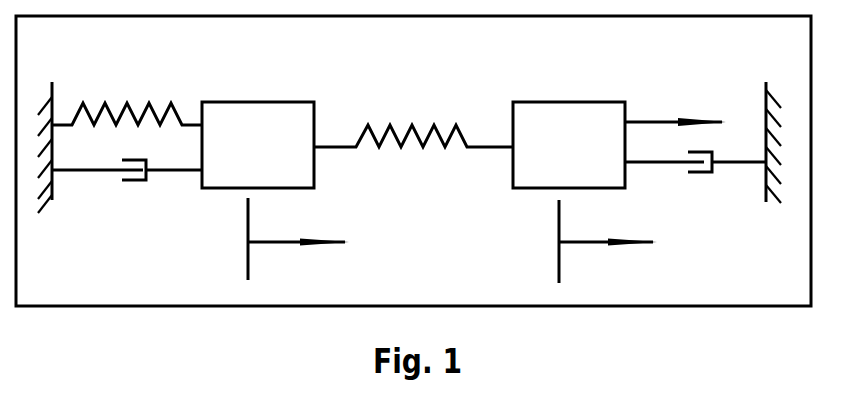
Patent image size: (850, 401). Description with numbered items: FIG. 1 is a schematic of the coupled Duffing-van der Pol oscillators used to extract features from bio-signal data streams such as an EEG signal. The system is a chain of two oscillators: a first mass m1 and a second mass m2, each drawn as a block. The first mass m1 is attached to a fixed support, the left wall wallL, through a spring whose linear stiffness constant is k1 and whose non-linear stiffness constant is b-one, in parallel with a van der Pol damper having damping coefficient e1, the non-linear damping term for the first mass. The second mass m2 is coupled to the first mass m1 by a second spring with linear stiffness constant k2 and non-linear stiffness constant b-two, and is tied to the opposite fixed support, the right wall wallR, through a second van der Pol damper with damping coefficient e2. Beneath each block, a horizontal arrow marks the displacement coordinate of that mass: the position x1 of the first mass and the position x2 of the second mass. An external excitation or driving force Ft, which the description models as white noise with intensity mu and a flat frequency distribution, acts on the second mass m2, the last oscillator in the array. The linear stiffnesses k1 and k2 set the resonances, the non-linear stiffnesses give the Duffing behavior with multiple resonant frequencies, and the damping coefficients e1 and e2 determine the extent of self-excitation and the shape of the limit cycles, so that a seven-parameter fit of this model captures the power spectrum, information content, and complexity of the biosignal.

The first mass m1 is at (258, 145).
The second mass m2 is at (569, 145).
The linear spring stiffness constant k1 is at (127, 89).
The linear spring stiffness constant k2 is at (413, 110).
The van der Pol damping coefficient e1 is at (127, 185).
The van der Pol damping coefficient e2 is at (695, 183).
The position of the first mass x1 is at (298, 239).
The position of the second mass x2 is at (608, 241).
The external excitation or driving force Ft is at (675, 104).
The left fixed wall wallL is at (45, 147).
The right fixed wall wallR is at (773, 142).